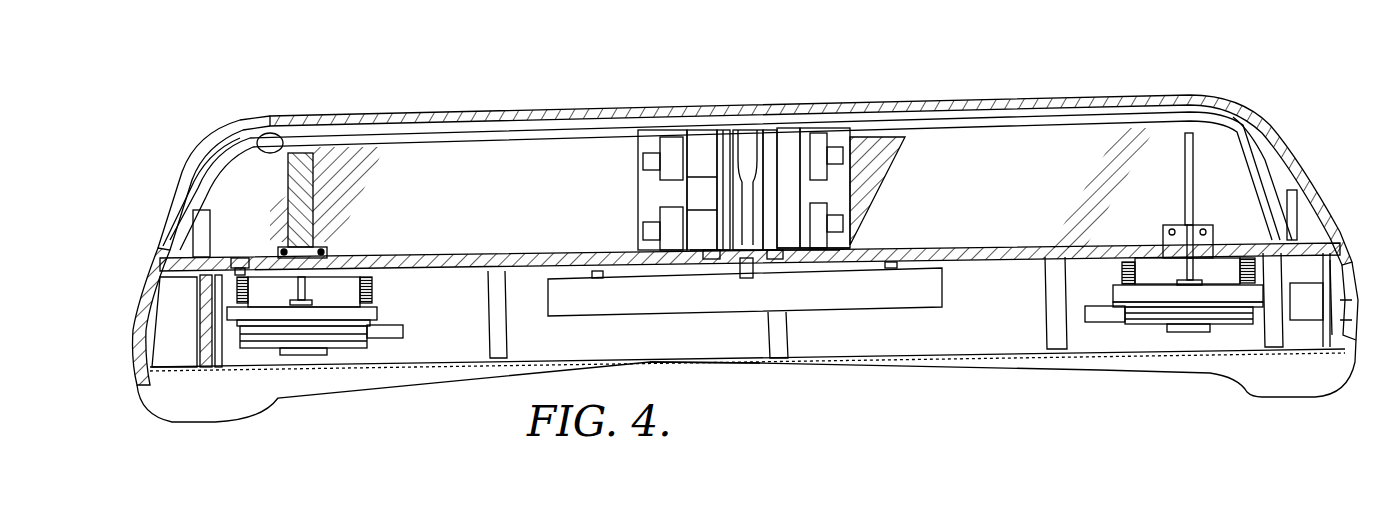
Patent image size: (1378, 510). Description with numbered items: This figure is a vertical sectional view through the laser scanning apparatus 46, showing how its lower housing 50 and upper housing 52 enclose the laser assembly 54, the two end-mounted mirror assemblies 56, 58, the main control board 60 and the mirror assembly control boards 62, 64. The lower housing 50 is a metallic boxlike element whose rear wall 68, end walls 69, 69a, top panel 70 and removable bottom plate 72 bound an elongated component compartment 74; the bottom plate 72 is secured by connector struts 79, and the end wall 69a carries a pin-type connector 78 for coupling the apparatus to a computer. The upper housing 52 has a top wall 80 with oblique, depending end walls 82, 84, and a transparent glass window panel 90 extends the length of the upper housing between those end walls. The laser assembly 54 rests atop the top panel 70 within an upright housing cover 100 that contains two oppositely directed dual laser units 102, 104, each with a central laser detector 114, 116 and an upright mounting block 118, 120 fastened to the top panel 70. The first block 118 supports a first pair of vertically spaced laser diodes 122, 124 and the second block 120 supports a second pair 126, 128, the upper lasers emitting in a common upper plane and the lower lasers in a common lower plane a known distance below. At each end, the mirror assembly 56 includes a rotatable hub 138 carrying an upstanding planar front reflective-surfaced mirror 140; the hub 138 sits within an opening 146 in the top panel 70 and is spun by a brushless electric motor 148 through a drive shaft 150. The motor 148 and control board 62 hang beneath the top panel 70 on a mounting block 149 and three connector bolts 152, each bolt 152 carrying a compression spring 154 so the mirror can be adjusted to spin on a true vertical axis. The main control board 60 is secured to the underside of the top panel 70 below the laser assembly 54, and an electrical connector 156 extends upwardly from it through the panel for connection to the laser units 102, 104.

The laser scanning apparatus 46 is at (790, 374).
The lower housing 50 is at (1211, 381).
The upper housing 52 is at (1258, 106).
The laser assembly 54 is at (634, 192).
The mirror assembly 56 is at (303, 152).
The mirror assembly 58 is at (1182, 148).
The main control board 60 is at (620, 307).
The mirror assembly control board 62 is at (410, 339).
The mirror assembly control board 64 is at (1091, 298).
The rear wall 68 is at (694, 352).
The end wall 69 is at (138, 262).
The end wall 69a is at (1354, 262).
The top panel 70 is at (949, 255).
The bottom plate 72 is at (950, 356).
The component compartment 74 is at (966, 329).
The pin-type connector 78 is at (1342, 294).
The connector struts 79 is at (495, 357).
The top wall 80 is at (481, 120).
The end wall 82 is at (206, 178).
The end wall 84 is at (1291, 160).
The transparent glass window panel 90 is at (1017, 143).
The housing cover 100 is at (874, 127).
The dual laser unit 102 is at (682, 127).
The dual laser unit 104 is at (800, 116).
The laser detector 114 is at (733, 200).
The laser detector 116 is at (751, 195).
The mounting block 118 is at (700, 245).
The mounting block 120 is at (790, 245).
The upper laser diode 122 is at (644, 168).
The lower laser diode 124 is at (645, 226).
The upper laser diode 126 is at (818, 158).
The lower laser diode 128 is at (857, 232).
The rotatable hub 138 is at (318, 223).
The mirror 140 is at (290, 154).
The opening 146 is at (335, 258).
The brushless electric motor 148 is at (347, 340).
The mounting block 149 is at (377, 312).
The drive shaft 150 is at (304, 294).
The connector bolts 152 is at (240, 257).
The compression spring 154 is at (232, 293).
The electrical connector 156 is at (744, 260).